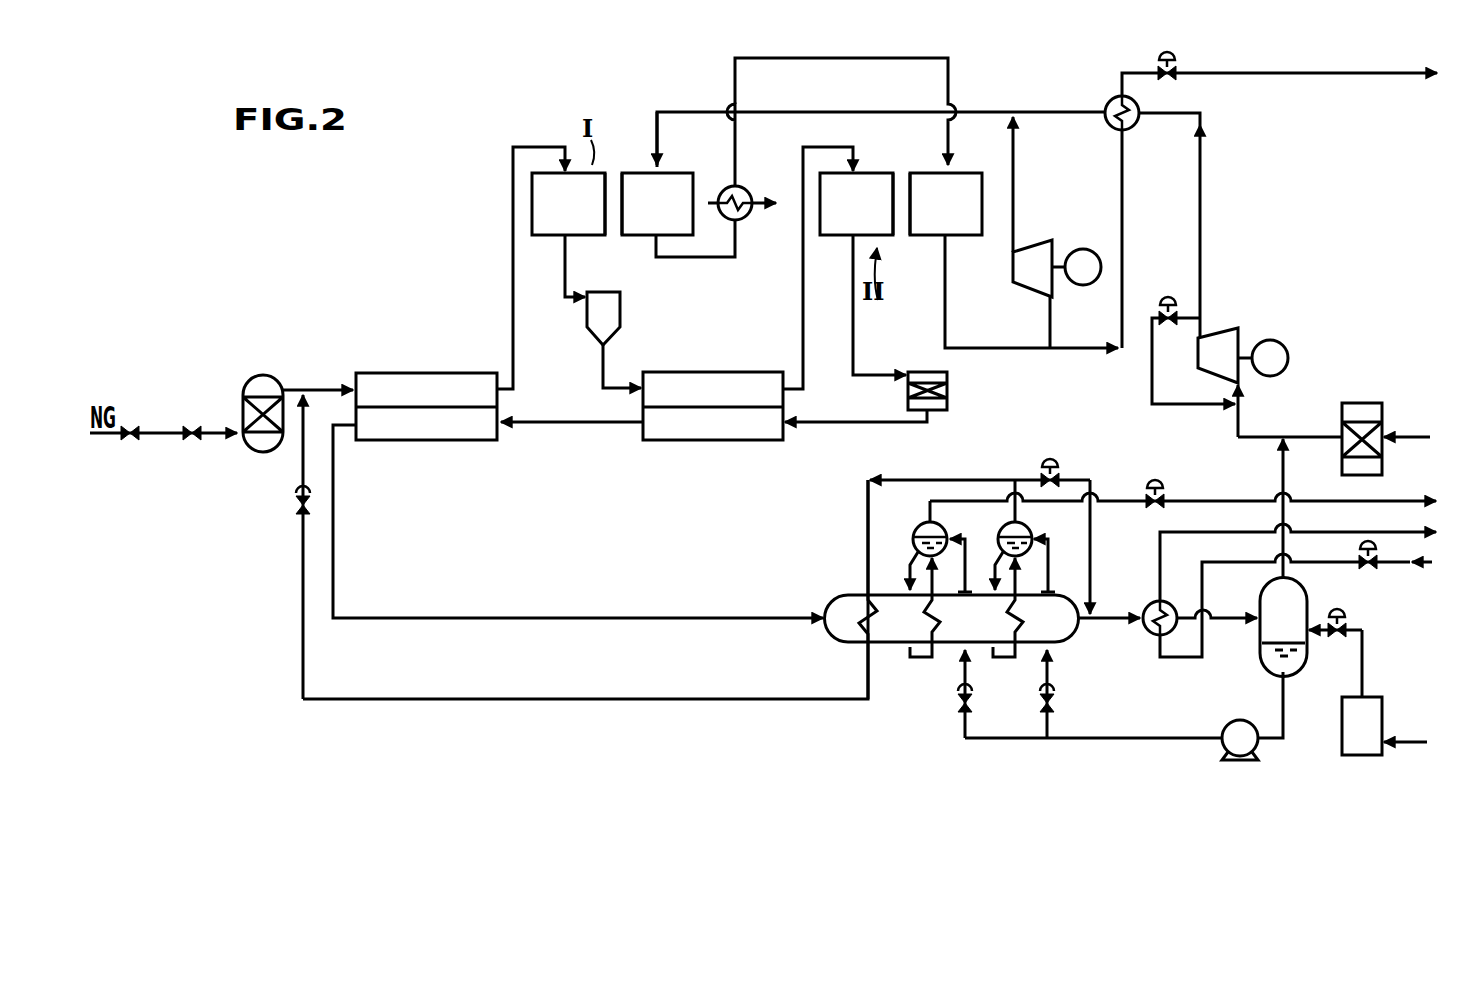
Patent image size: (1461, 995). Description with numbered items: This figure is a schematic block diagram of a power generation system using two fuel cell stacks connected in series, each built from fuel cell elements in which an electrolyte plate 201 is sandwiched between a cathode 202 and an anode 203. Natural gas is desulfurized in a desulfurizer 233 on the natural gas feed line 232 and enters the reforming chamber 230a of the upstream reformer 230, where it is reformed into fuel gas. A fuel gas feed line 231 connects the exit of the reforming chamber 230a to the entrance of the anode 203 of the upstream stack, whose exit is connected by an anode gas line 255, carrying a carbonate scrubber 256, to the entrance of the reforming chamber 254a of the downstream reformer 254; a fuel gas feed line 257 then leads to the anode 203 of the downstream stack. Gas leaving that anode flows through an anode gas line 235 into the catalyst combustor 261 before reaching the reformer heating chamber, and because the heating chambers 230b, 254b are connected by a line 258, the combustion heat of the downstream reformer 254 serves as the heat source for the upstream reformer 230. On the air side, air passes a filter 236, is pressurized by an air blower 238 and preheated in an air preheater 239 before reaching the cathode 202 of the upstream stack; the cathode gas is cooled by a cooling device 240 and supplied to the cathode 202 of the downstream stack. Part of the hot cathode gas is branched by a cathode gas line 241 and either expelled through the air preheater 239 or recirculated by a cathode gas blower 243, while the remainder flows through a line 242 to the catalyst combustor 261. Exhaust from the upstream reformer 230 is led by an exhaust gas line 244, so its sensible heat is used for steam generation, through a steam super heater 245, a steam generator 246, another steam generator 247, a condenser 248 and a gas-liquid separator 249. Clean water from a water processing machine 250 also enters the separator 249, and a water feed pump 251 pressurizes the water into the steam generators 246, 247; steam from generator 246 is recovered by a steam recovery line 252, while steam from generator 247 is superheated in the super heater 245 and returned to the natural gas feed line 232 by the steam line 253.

The electrolyte plate 201 is at (615, 173).
The cathode 202 is at (802, 204).
The anode 203 is at (712, 204).
The upstream reformer 230 is at (401, 368).
The reforming chamber 230a is at (455, 393).
The heating chamber 230b is at (415, 440).
The fuel gas feed line 231 is at (513, 272).
The natural gas feed line 232 is at (152, 432).
The desulfurizer 233 is at (252, 380).
The anode gas line 235 is at (870, 356).
The filter 236 is at (1376, 388).
The air blower 238 is at (1226, 330).
The air preheater 239 is at (1135, 126).
The cooling device 240 is at (747, 190).
The cathode gas line 241 is at (945, 316).
The line 242 is at (950, 372).
The cathode gas blower 243 is at (1052, 245).
The exhaust gas line 244 is at (556, 595).
The steam super heater 245 is at (855, 612).
The steam generator 246 is at (920, 612).
The steam generator 247 is at (1020, 617).
The condenser 248 is at (1140, 606).
The gas-liquid separator 249 is at (1256, 650).
The water processing machine 250 is at (1382, 705).
The water feed pump 251 is at (1222, 750).
The steam recovery line 252 is at (1118, 497).
The steam line 253 is at (303, 600).
The downstream reformer 254 is at (664, 441).
The reforming chamber 254a is at (758, 388).
The heating chamber 254b is at (700, 441).
The anode gas line 255 is at (563, 300).
The carbonate scrubber 256 is at (622, 308).
The fuel gas feed line 257 is at (803, 300).
The line 258 is at (588, 425).
The catalyst combustor 261 is at (950, 412).